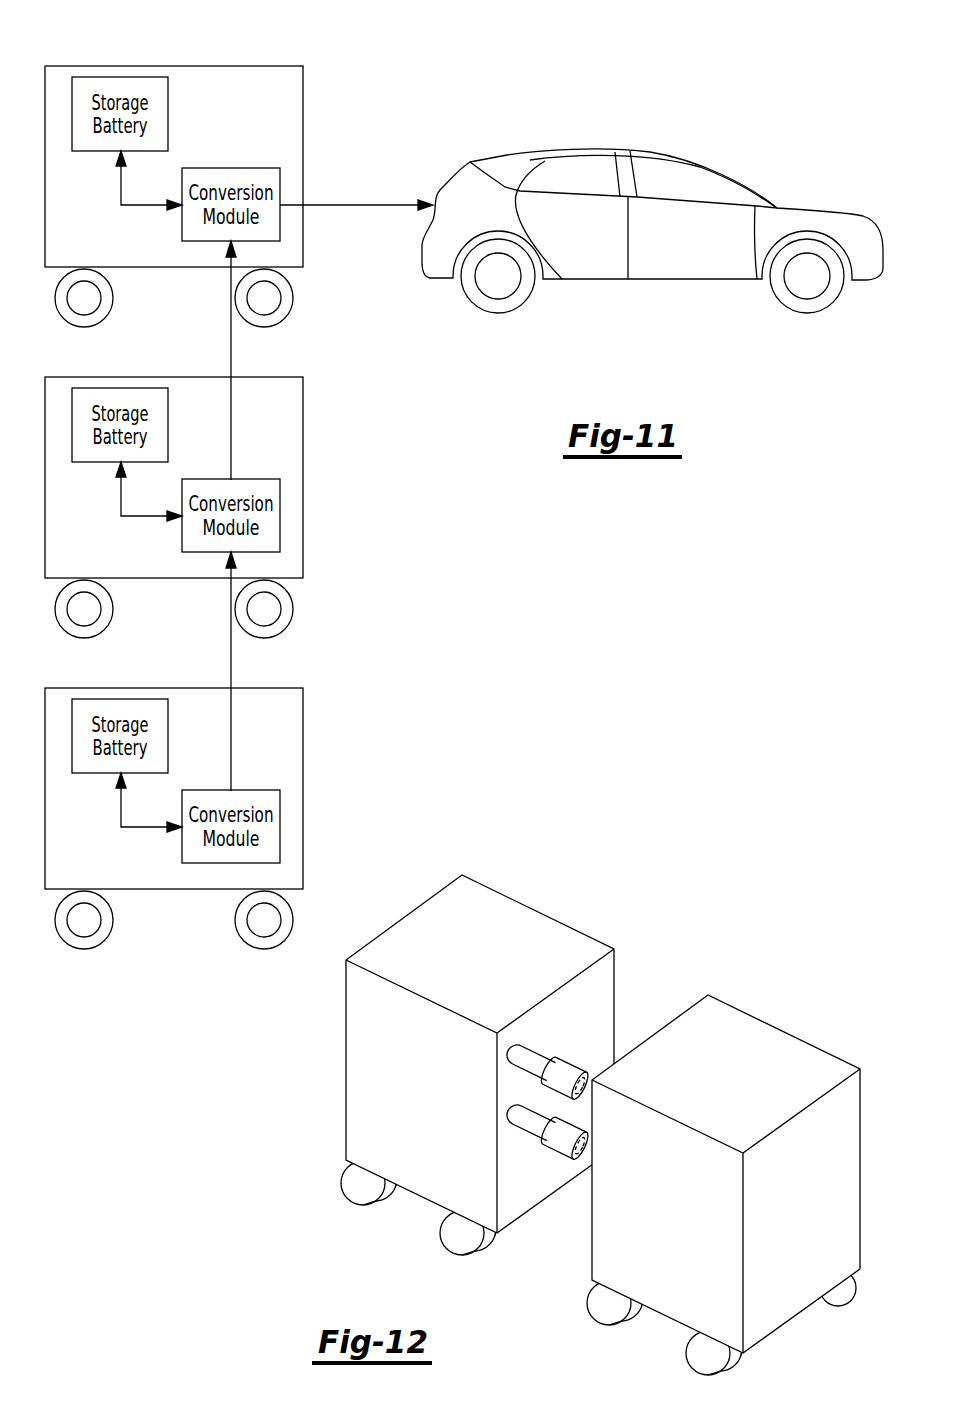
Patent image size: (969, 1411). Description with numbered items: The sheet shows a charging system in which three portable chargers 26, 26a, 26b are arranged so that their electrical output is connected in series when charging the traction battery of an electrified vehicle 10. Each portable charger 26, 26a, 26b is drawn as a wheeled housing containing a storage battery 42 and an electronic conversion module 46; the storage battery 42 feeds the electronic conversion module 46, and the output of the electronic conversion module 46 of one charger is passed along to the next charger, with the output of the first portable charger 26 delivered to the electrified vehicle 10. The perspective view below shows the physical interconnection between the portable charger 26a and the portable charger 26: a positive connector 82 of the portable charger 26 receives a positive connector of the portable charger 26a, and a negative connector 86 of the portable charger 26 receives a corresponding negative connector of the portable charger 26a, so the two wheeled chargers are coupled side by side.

In FIG. 11, the electrified vehicle 10 is at (620, 158).
In FIG. 11, the portable charger 26 is at (175, 66).
In FIG. 12, the portable charger 26 is at (763, 1047).
In FIG. 11, the portable charger 26a is at (175, 377).
In FIG. 12, the portable charger 26a is at (518, 927).
In FIG. 11, the portable charger 26b is at (175, 688).
In FIG. 11, the storage battery 42 is at (120, 77).
In FIG. 11, the electronic conversion module 46 is at (232, 168).
In FIG. 12, the positive connector 82 is at (568, 1163).
In FIG. 12, the negative connector 86 is at (592, 1062).